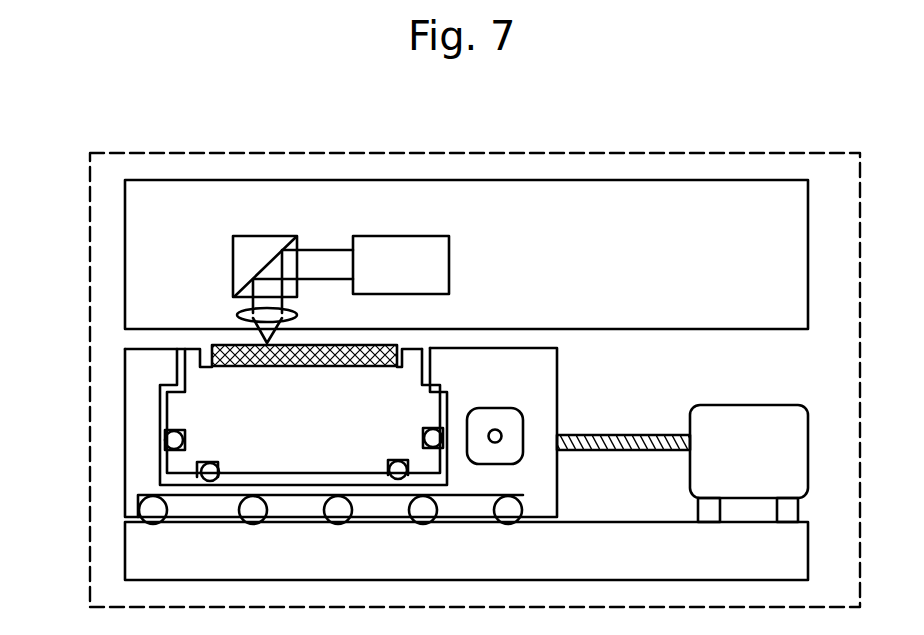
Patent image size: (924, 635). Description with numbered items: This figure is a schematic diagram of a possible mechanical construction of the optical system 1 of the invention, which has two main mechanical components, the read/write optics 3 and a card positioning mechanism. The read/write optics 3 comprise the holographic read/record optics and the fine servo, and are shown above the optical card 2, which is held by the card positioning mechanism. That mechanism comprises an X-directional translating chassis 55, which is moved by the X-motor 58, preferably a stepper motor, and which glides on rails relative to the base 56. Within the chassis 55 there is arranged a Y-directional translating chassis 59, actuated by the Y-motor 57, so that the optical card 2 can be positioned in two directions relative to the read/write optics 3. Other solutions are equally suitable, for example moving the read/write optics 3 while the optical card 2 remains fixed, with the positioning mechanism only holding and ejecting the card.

The optical system 1 is at (572, 121).
The optical card 2 is at (210, 343).
The read/write optics 3 is at (466, 261).
The X-directional translating chassis 55 is at (143, 432).
The base 56 is at (466, 551).
The Y-motor 57 is at (483, 405).
The X-motor 58 is at (682, 463).
The Y-directional translating chassis 59 is at (303, 416).